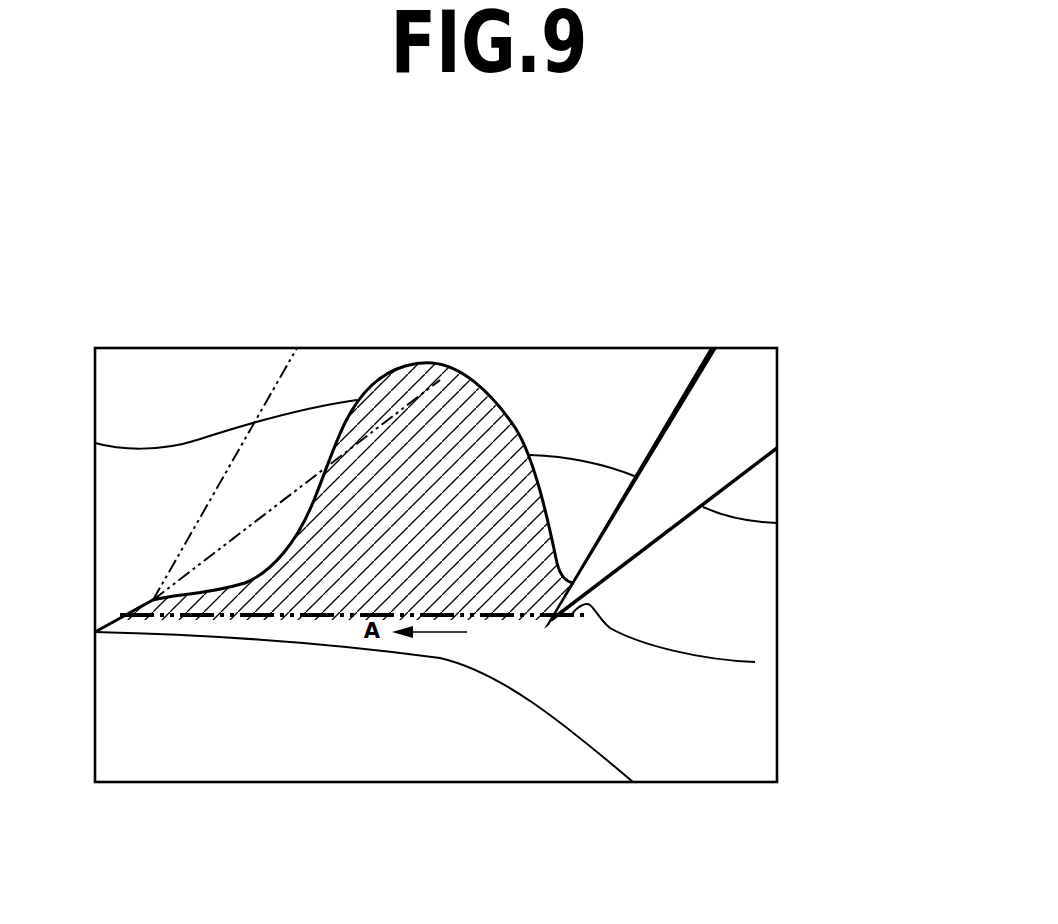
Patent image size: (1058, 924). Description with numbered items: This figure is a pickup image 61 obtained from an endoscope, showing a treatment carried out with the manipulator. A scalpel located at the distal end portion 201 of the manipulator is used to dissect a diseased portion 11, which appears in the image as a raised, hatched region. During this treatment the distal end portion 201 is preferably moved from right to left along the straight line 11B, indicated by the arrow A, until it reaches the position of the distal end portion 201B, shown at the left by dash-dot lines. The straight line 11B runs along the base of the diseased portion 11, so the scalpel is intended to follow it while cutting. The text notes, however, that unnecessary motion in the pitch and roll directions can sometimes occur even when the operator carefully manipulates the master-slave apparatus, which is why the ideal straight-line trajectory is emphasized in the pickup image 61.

The diseased portion 11 is at (433, 368).
The straight line 11B is at (307, 620).
The pickup image 61 is at (190, 782).
The distal end portion 201 is at (727, 382).
The position of the distal end portion 201B is at (290, 392).